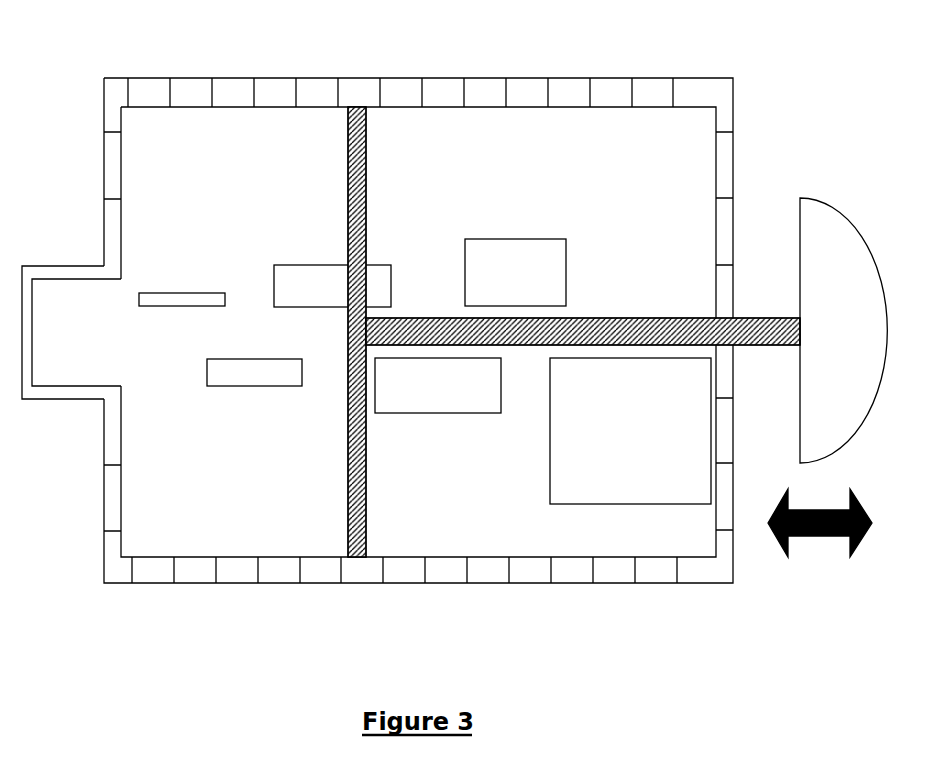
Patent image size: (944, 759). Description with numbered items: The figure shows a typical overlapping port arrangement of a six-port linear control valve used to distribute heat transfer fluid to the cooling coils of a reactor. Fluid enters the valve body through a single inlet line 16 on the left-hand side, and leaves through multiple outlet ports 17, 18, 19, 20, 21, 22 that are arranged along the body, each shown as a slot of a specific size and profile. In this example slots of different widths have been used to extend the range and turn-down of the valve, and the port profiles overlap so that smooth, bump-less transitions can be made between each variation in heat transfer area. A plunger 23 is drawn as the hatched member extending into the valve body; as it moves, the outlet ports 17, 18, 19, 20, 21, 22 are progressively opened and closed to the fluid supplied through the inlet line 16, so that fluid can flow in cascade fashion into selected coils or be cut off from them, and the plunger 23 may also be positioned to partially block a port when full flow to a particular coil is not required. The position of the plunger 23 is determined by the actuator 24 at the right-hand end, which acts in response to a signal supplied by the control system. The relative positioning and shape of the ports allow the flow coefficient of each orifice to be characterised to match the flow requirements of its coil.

The inlet line 16 is at (71, 332).
The outlet port 17 is at (182, 288).
The outlet port 18 is at (254, 360).
The outlet port 19 is at (332, 273).
The outlet port 20 is at (438, 398).
The outlet port 21 is at (515, 260).
The outlet port 22 is at (630, 445).
The plunger 23 is at (375, 143).
The actuator 24 is at (813, 172).